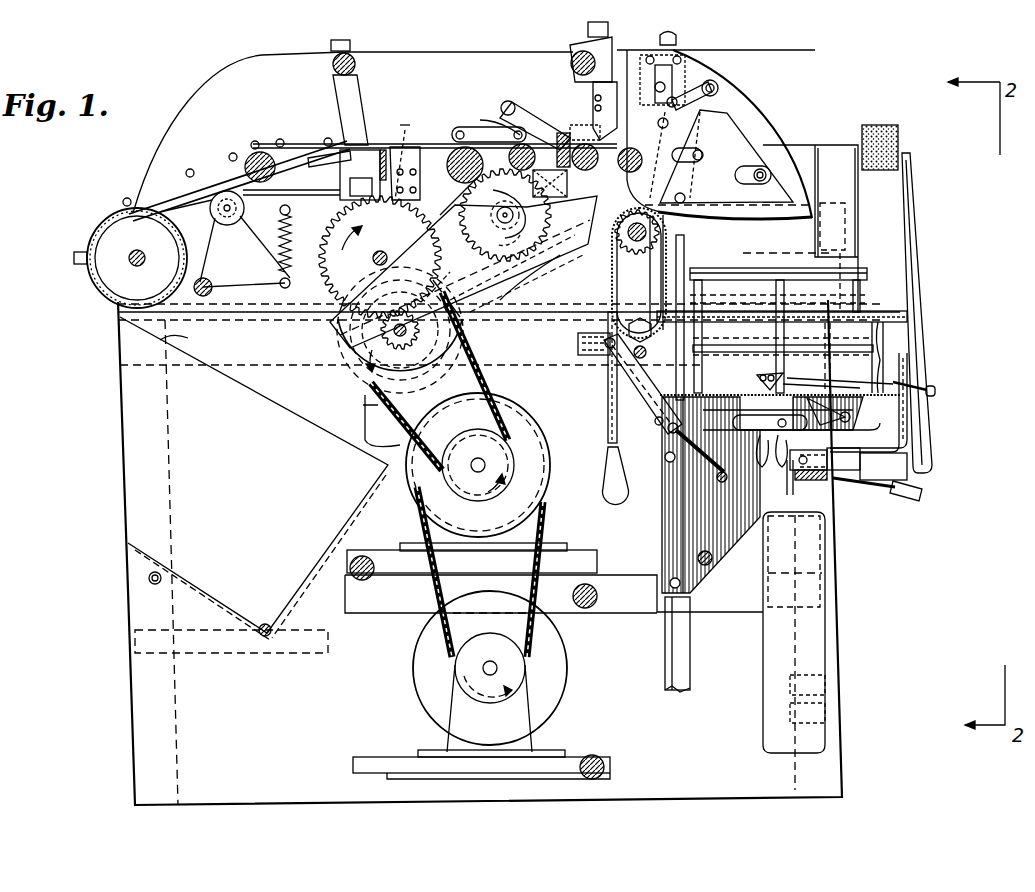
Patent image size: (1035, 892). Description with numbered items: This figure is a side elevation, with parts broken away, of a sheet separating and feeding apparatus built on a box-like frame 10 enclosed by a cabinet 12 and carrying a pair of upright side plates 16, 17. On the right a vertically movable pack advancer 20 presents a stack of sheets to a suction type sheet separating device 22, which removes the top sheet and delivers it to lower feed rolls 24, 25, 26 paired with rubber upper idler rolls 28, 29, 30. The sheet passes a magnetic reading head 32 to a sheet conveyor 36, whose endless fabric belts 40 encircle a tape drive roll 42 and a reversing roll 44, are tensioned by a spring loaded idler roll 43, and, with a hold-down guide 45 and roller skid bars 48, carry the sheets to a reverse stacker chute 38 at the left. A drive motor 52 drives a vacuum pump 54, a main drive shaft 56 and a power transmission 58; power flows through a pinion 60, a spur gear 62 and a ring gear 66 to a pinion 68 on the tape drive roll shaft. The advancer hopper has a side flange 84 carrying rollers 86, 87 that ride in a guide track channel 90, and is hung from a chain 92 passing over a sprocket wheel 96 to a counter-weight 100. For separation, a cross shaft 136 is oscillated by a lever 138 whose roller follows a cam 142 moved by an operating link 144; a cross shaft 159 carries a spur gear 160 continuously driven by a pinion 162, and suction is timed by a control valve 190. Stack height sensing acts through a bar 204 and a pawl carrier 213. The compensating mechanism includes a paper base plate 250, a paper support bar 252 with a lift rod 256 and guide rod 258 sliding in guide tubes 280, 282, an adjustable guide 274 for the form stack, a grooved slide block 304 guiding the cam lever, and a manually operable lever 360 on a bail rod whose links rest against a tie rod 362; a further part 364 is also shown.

The box-like frame 10 is at (128, 688).
The cabinet 12 is at (292, 701).
The side plate 16 is at (752, 220).
The side plate 17 is at (509, 52).
The pack advancer 20 is at (886, 300).
The sheet separating device 22 is at (697, 50).
The lower feed roll 24 is at (628, 174).
The lower feed roll 25 is at (577, 168).
The lower feed roll 26 is at (475, 127).
The upper feed idler roll 28 is at (592, 86).
The upper feed idler roll 29 is at (575, 125).
The upper feed idler roll 30 is at (490, 118).
The magnetic reading head 32 is at (516, 100).
The sheet conveyor 36 is at (393, 142).
The reverse stacker chute 38 is at (283, 405).
The endless fabric belts 40 is at (292, 192).
The tape drive roll 42 is at (450, 150).
The spring loaded idler roll 43 is at (236, 222).
The reversing roll 44 is at (155, 212).
The hold-down guide 45 is at (408, 140).
The roller skid bars 48 is at (362, 110).
The drive motor 52 is at (568, 666).
The vacuum pump 54 is at (530, 420).
The main drive shaft 56 is at (462, 340).
The power transmission 58 is at (518, 298).
The pinion 60 is at (528, 286).
The spur gear 62 is at (470, 248).
The ring gear 66 is at (460, 214).
The pinion 68 is at (460, 196).
The side flange 84 is at (740, 580).
The roller 86 is at (665, 455).
The roller 87 is at (662, 564).
The guide track channel 90 is at (692, 650).
The chain 92 is at (606, 414).
The sprocket wheel 96 is at (636, 260).
The counter-weight 100 is at (620, 510).
The cross shaft 136 is at (720, 90).
The lever 138 is at (700, 80).
The cam 142 is at (740, 126).
The operating link 144 is at (688, 148).
The cross shaft 159 is at (372, 264).
The spur gear 160 is at (305, 236).
The pinion 162 is at (392, 348).
The control valve 190 is at (680, 42).
The bar 204 is at (752, 160).
The pawl carrier 213 is at (818, 130).
The paper base plate 250 is at (905, 318).
The paper support bar 252 is at (878, 262).
The lift rod 256 is at (784, 294).
The guide rod 258 is at (704, 294).
The guide 274 is at (920, 270).
The guide tube 280 is at (703, 338).
The guide tube 282 is at (811, 358).
The grooved slide block 304 is at (570, 360).
The manually operable lever 360 is at (922, 494).
The tie rod 362 is at (710, 608).
The rod 364 is at (935, 391).